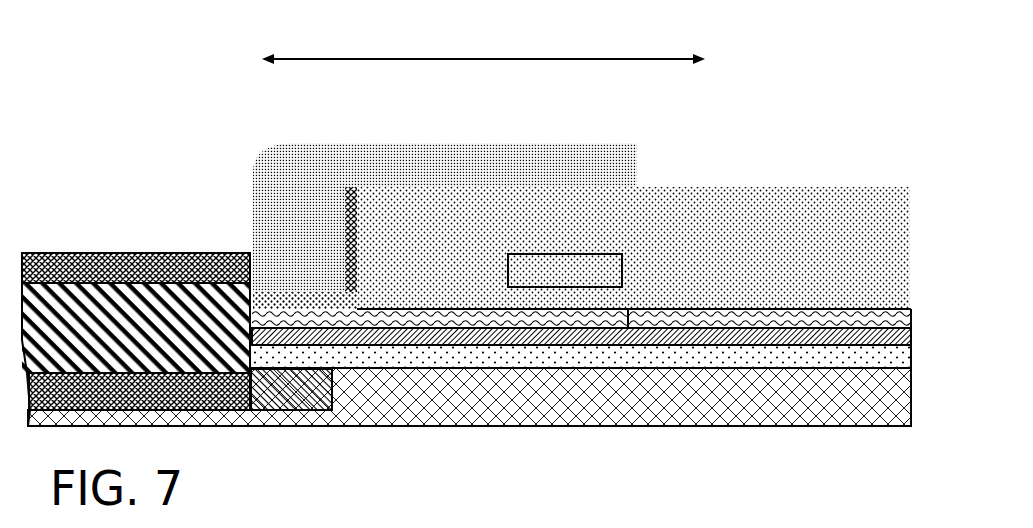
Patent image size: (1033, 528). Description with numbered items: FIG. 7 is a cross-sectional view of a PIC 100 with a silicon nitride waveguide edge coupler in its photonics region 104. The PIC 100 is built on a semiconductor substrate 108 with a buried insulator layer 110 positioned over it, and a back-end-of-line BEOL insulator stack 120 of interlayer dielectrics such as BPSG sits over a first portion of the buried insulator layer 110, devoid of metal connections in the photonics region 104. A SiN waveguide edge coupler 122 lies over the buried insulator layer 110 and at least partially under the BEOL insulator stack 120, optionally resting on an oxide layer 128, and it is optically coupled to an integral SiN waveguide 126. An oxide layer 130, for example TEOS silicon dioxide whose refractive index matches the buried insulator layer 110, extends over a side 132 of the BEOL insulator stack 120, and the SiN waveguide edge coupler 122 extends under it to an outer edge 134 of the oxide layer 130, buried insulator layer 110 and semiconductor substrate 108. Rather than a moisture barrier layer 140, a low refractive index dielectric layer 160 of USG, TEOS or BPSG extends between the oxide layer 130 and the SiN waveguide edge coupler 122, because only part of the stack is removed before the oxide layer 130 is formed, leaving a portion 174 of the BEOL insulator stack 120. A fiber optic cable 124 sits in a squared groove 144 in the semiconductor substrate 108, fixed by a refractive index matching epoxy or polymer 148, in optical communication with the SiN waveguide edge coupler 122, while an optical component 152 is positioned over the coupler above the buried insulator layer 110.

The PIC 100 is at (284, 135).
The photonics region 104 is at (483, 45).
The semiconductor substrate 108 is at (687, 410).
The buried insulator layer 110 is at (807, 360).
The BEOL insulator stack 120 is at (748, 212).
The SiN waveguide edge coupler 122 is at (605, 320).
The fiber optic cable 124 is at (85, 243).
The SiN waveguide 126 is at (830, 322).
The oxide layer 128 is at (597, 338).
The oxide layer 130 is at (472, 160).
The side of BEOL insulator stack 132 is at (357, 245).
The outer edge 134 is at (257, 358).
The moisture barrier layer 140 is at (347, 203).
The squared groove 144 is at (205, 412).
The refractive index matching epoxy or polymer 148 is at (265, 385).
The optical component 152 is at (597, 255).
The low refractive index dielectric layer 160 is at (357, 401).
The portion of BEOL insulator stack 174 is at (307, 302).